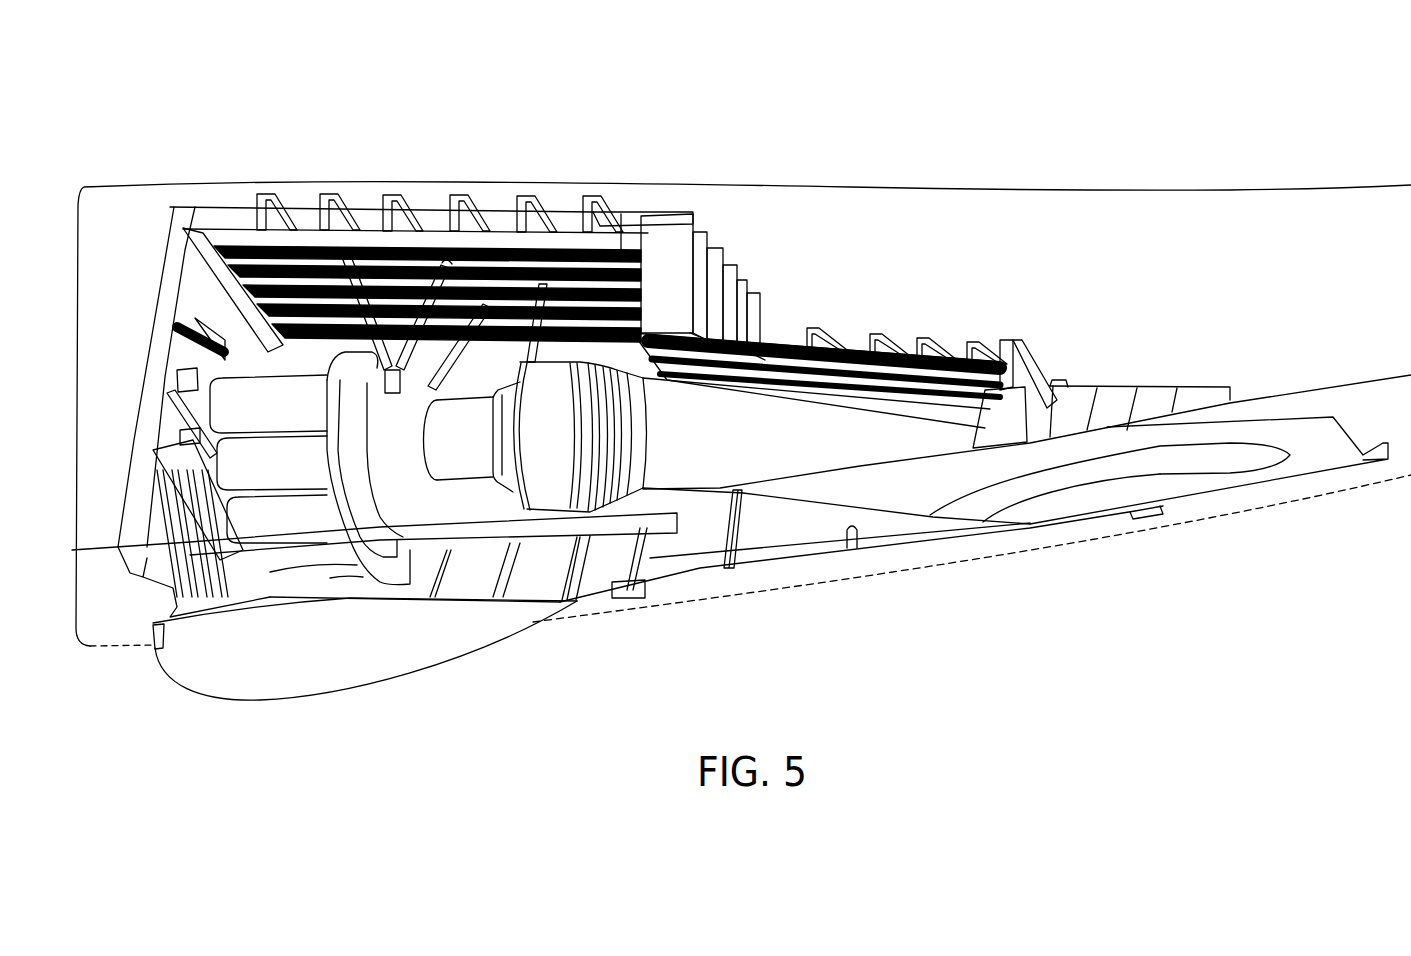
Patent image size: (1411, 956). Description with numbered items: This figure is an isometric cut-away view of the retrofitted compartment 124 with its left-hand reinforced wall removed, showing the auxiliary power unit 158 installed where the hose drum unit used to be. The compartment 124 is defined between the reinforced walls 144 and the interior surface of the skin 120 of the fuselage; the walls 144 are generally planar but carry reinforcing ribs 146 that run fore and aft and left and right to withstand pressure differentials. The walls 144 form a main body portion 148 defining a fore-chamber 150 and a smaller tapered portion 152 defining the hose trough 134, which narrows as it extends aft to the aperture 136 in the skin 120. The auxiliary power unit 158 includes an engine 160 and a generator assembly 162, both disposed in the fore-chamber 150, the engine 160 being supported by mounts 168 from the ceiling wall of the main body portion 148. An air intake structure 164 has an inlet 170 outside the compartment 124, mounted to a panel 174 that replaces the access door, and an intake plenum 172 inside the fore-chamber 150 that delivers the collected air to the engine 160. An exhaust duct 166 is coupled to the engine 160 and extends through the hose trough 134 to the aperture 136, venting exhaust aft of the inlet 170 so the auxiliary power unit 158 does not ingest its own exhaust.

The skin 120 is at (1383, 397).
The compartment 124 is at (150, 171).
The hose trough 134 is at (837, 390).
The aperture 136 is at (1213, 463).
The reinforced walls 144 is at (433, 240).
The reinforcing ribs 146 is at (453, 203).
The main body portion 148 is at (290, 218).
The fore-chamber 150 is at (607, 283).
The tapered portion 152 is at (913, 540).
The auxiliary power unit 158 is at (467, 500).
The engine 160 is at (557, 487).
The generator assembly 162 is at (233, 403).
The air intake structure 164 is at (163, 632).
The exhaust duct 166 is at (937, 427).
The mounts 168 is at (353, 260).
The inlet 170 is at (330, 677).
The intake plenum 172 is at (387, 570).
The panel 174 is at (602, 598).